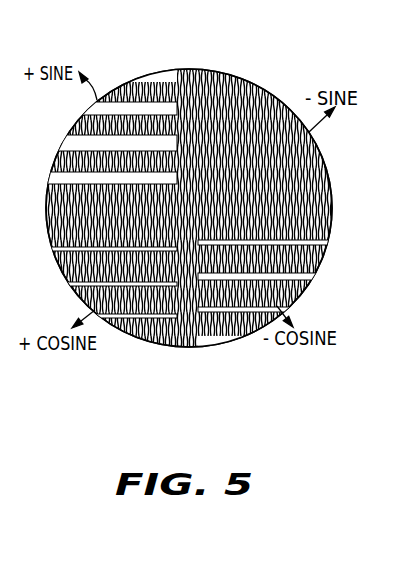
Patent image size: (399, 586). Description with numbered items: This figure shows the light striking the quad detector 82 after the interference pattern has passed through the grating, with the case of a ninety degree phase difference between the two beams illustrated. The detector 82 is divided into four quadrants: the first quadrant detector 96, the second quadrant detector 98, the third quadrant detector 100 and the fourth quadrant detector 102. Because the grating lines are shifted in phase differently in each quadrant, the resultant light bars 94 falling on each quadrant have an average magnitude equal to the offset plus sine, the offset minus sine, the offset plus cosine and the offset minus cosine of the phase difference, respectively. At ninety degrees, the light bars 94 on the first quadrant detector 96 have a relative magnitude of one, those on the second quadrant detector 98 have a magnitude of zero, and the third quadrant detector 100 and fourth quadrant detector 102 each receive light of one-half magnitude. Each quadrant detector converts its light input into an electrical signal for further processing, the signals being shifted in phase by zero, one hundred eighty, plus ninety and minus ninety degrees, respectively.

The quad detector 82 is at (235, 75).
The light bars 94 is at (89, 108).
The first quadrant detector 96 is at (167, 70).
The second quadrant detector 98 is at (324, 167).
The third quadrant detector 100 is at (83, 301).
The fourth quadrant detector 102 is at (253, 332).